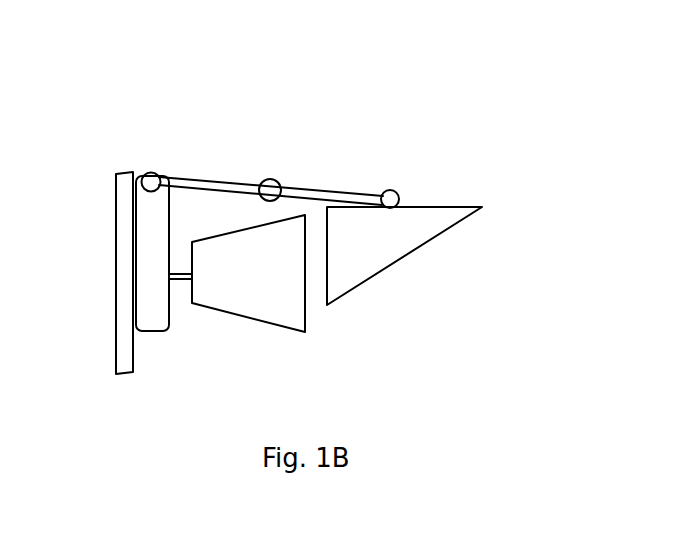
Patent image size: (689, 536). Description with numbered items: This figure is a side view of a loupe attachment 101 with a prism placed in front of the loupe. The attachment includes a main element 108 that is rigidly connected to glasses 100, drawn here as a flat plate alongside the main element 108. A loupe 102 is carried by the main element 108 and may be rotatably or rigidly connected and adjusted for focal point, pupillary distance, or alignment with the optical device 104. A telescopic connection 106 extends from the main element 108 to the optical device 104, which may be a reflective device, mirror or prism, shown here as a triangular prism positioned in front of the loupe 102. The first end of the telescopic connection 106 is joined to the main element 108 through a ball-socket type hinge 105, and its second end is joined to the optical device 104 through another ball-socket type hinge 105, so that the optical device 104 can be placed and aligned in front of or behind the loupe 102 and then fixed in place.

The glasses 100 is at (119, 218).
The loupe attachment 101 is at (335, 137).
The loupe 102 is at (287, 303).
The optical device 104 is at (425, 222).
The ball-socket type hinge 105 is at (150, 180).
The telescopic connection 106 is at (193, 178).
The main element 108 is at (147, 320).